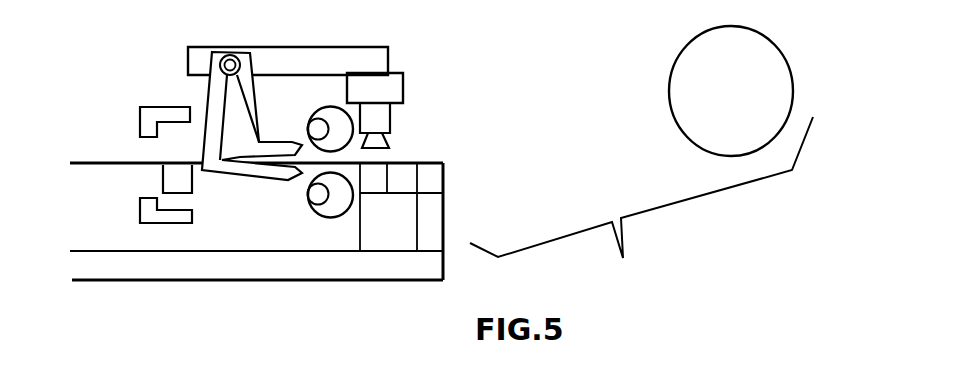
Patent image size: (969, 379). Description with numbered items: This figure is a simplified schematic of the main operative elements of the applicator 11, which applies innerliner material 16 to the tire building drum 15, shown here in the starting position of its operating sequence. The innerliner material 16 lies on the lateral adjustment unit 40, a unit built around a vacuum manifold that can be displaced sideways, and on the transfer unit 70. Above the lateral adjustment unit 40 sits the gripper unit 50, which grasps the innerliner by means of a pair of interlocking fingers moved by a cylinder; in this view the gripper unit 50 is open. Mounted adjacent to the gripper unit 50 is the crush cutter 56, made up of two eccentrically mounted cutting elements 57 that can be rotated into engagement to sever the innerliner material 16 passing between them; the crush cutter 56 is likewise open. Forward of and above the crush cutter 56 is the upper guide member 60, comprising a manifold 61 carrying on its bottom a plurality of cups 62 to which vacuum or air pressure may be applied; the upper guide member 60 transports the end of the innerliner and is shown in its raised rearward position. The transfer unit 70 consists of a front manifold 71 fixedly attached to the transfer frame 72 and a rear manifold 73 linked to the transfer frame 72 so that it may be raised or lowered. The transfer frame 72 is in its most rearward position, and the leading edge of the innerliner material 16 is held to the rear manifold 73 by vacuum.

The applicator 11 is at (404, 39).
The tire building drum 15 is at (675, 123).
The innerliner material 16 is at (92, 160).
The lateral adjustment unit 40 is at (195, 182).
The gripper unit 50 is at (205, 91).
The crush cutter 56 is at (305, 185).
The cutting elements 57 is at (337, 115).
The upper guide member 60 is at (395, 117).
The manifold 61 is at (390, 128).
The cups 62 is at (388, 142).
The transfer unit 70 is at (450, 212).
The front manifold 71 is at (433, 203).
The transfer frame 72 is at (178, 268).
The rear manifold 73 is at (377, 187).